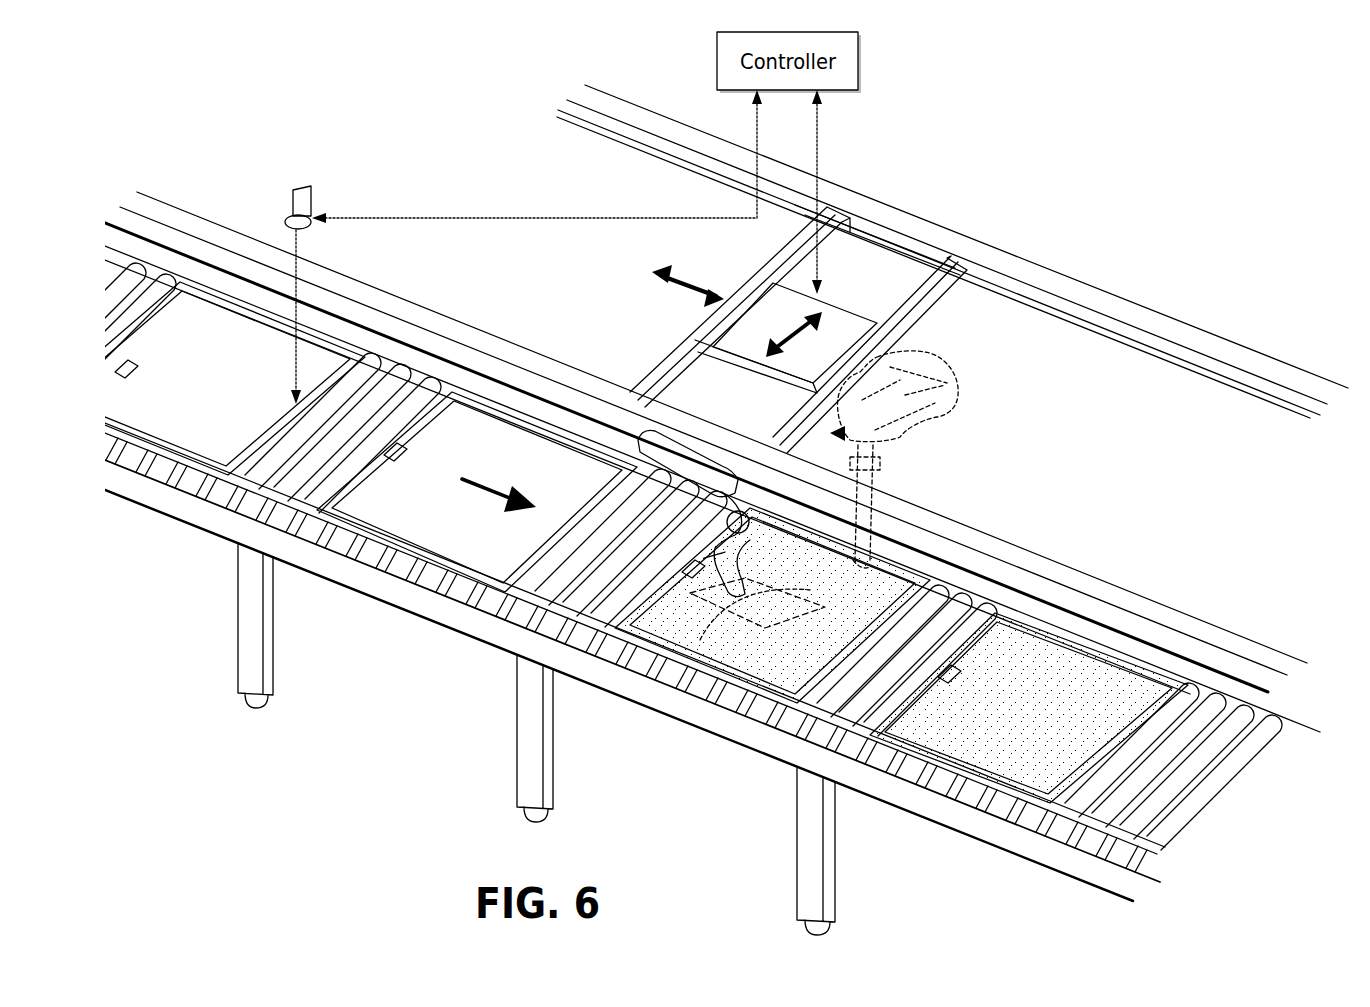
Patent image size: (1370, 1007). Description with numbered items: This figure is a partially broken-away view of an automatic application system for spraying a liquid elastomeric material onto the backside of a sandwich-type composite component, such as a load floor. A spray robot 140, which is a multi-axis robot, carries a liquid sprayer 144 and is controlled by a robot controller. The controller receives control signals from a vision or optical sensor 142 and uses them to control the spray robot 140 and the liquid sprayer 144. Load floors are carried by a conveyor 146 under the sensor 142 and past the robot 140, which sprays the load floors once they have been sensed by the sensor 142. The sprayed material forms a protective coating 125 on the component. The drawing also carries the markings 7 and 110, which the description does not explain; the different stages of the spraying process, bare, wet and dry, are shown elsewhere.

The section view indicator 7 is at (700, 690).
The conveyor frame rail 110 is at (1094, 647).
The protective coating 125 is at (997, 757).
The spray robot 140 is at (915, 435).
The vision or optical sensor 142 is at (318, 203).
The liquid sprayer 144 is at (723, 602).
The conveyor 146 is at (462, 636).